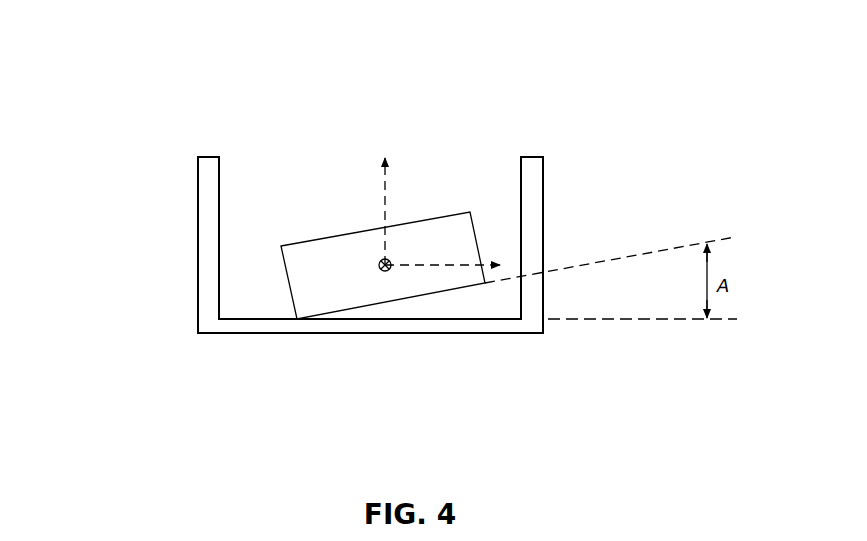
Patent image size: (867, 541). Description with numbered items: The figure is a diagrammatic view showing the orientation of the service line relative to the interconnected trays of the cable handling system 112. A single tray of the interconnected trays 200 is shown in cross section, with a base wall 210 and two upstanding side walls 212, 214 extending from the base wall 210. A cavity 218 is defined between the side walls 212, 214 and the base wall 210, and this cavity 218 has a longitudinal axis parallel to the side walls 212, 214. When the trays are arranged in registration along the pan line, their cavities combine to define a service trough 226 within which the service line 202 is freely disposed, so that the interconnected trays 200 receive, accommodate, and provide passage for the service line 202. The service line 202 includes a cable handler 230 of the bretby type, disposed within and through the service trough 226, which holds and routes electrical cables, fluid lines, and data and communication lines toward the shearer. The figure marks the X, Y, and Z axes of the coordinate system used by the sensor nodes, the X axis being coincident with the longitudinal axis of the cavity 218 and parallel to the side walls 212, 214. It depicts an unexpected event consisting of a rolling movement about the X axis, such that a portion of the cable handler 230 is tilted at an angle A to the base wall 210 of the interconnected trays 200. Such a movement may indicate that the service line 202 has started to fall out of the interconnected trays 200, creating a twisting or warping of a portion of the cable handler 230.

The cable handling system 112 is at (705, 69).
The interconnected trays 200 is at (198, 175).
The service line 202 is at (353, 229).
The base wall 210 is at (408, 335).
The side wall 212 is at (543, 218).
The side wall 214 is at (198, 223).
The cavity 218 is at (413, 183).
The service trough 226 is at (370, 145).
The cable handler 230 is at (452, 212).